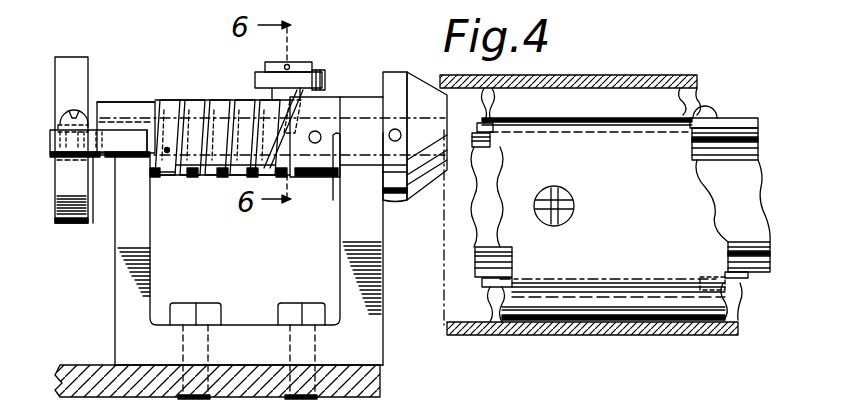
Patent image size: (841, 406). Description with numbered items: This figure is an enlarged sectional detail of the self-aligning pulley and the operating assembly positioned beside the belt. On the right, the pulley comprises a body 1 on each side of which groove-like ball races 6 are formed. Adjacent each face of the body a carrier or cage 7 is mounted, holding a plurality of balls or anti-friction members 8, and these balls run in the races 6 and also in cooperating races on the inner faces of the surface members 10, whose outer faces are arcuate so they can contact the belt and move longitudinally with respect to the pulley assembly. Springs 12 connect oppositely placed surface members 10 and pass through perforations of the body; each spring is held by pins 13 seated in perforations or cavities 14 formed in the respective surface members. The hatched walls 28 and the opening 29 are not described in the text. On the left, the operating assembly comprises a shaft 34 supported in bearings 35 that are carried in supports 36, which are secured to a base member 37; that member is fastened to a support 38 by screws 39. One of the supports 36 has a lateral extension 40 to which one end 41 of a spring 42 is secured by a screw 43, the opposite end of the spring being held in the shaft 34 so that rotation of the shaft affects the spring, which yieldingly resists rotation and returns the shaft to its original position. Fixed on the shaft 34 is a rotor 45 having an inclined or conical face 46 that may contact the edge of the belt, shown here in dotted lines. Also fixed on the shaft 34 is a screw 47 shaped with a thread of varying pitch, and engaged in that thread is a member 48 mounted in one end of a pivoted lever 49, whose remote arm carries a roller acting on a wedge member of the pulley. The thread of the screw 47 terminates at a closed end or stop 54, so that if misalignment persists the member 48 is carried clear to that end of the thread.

The body 1 is at (745, 173).
The ball races 6 is at (743, 147).
The carrier or cage 7 is at (715, 120).
The balls or anti-friction members 8 is at (490, 120).
The surface members 10 is at (685, 92).
The springs 12 is at (563, 202).
The pins 13 is at (557, 198).
The perforations or cavities 14 is at (568, 210).
The wall 28 is at (614, 75).
The opening 29 is at (436, 75).
The shaft 34 is at (50, 140).
The bearings 35 is at (117, 110).
The supports 36 is at (143, 235).
The base member 37 is at (240, 337).
The support 38 is at (78, 380).
The screws 39 is at (188, 307).
The lateral extension 40 is at (125, 137).
The end of spring 41 is at (58, 125).
The spring 42 is at (78, 82).
The screw 43 is at (79, 112).
The rotor 45 is at (390, 80).
The inclined or conical face 46 is at (423, 192).
The screw 47 is at (220, 100).
The member 48 is at (278, 98).
The lever 49 is at (320, 82).
The closed end or stop 54 is at (164, 176).